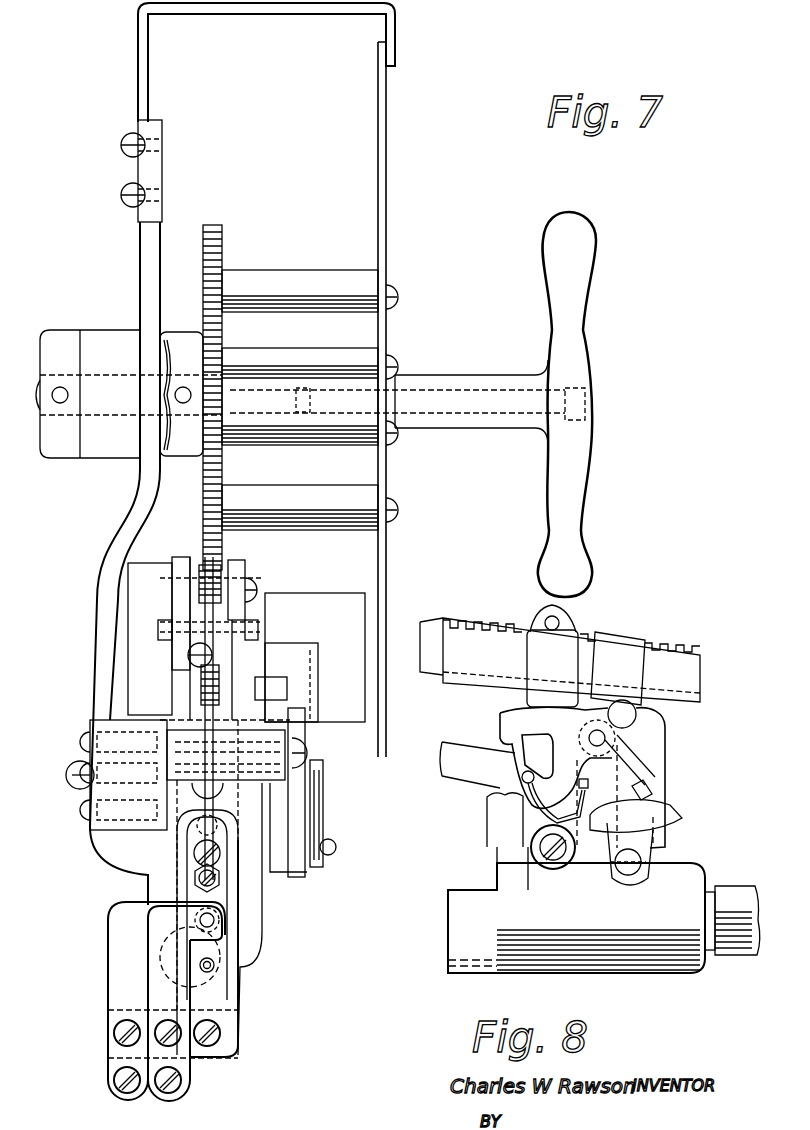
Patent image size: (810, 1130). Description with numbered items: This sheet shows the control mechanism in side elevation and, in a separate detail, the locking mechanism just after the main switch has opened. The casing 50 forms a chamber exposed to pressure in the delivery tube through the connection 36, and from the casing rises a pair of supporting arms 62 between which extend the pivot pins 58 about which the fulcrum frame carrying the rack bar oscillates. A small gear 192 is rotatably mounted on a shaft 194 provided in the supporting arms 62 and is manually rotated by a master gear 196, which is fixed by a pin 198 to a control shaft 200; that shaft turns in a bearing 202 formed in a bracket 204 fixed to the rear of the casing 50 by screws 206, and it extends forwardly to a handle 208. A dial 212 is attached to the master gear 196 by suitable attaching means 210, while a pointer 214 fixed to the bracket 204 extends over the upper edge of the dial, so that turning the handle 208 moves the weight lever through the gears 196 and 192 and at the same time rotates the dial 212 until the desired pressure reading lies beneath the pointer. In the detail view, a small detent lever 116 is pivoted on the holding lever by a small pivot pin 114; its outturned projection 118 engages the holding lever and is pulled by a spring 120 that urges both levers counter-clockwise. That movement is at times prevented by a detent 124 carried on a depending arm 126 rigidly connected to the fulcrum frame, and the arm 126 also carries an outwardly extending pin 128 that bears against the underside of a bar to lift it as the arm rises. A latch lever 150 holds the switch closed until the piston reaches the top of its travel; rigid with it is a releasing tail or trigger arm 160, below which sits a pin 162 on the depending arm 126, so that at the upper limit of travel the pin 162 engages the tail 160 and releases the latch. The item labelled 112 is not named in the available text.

In FIG. 8, the connection 36 is at (735, 892).
In FIG. 7, the casing 50 is at (255, 910).
In FIG. 8, the casing 50 is at (675, 975).
In FIG. 7, the pivot pins 58 is at (165, 628).
In FIG. 7, the supporting arms 62 is at (236, 568).
In FIG. 8, the lever 112 is at (522, 722).
In FIG. 8, the small pivot pin 114 is at (606, 737).
In FIG. 8, the detent lever 116 is at (635, 765).
In FIG. 8, the outturned projection 118 is at (650, 800).
In FIG. 8, the spring 120 is at (652, 848).
In FIG. 8, the detent 124 is at (656, 785).
In FIG. 8, the depending arm 126 is at (650, 720).
In FIG. 8, the outwardly extending pin 128 is at (627, 705).
In FIG. 8, the latch lever 150 is at (525, 823).
In FIG. 8, the releasing tail or trigger arm 160 is at (666, 822).
In FIG. 8, the pin 162 is at (632, 870).
In FIG. 7, the small gear 192 is at (205, 560).
In FIG. 7, the shaft 194 is at (257, 578).
In FIG. 7, the master gear 196 is at (215, 228).
In FIG. 7, the pin 198 is at (183, 387).
In FIG. 7, the control shaft 200 is at (253, 398).
In FIG. 7, the bearing 202 is at (122, 345).
In FIG. 7, the bracket 204 is at (145, 254).
In FIG. 7, the screws 206 is at (80, 767).
In FIG. 7, the handle 208 is at (570, 330).
In FIG. 7, the attaching means 210 is at (275, 277).
In FIG. 7, the dial 212 is at (383, 213).
In FIG. 7, the pointer 214 is at (395, 48).